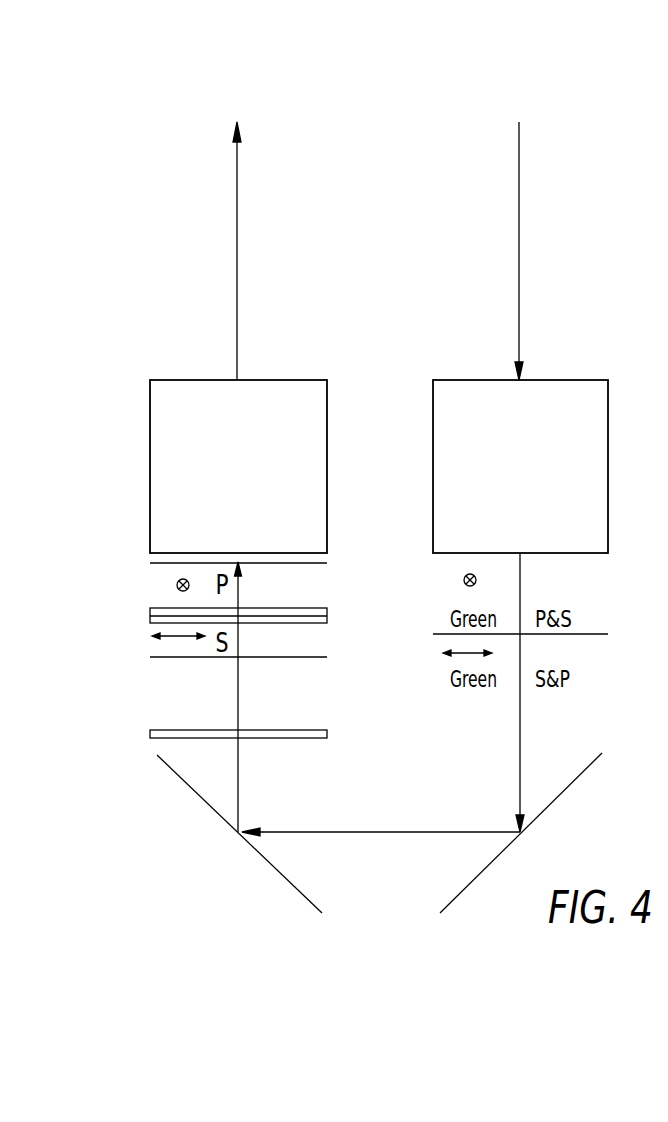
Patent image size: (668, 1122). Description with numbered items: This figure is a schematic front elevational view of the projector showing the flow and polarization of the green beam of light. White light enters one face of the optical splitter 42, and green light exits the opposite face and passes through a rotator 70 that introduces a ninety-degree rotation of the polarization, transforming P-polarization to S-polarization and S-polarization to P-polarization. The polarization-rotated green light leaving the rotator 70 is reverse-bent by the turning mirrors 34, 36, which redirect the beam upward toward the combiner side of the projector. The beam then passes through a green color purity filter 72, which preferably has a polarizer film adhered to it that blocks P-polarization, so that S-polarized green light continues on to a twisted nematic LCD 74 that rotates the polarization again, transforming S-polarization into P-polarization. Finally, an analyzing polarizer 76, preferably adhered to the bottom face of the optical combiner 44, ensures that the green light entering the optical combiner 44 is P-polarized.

The turning mirror 34 is at (552, 802).
The turning mirror 36 is at (212, 808).
The optical splitter 42 is at (581, 379).
The optical combiner 44 is at (298, 379).
The rotator 70 is at (588, 634).
The green color purity filter 72 is at (170, 730).
The twisted nematic LCD 74 is at (307, 623).
The analyzing polarizer 76 is at (307, 563).